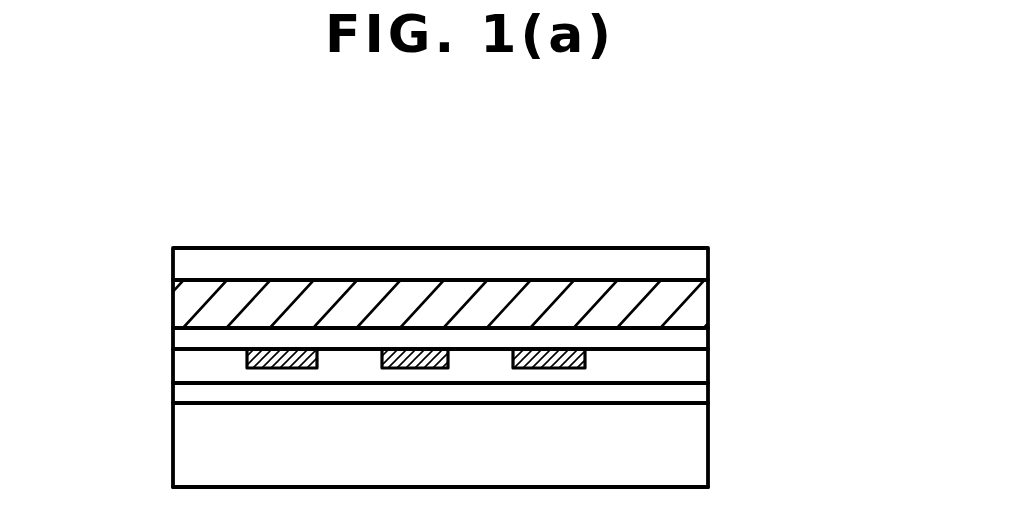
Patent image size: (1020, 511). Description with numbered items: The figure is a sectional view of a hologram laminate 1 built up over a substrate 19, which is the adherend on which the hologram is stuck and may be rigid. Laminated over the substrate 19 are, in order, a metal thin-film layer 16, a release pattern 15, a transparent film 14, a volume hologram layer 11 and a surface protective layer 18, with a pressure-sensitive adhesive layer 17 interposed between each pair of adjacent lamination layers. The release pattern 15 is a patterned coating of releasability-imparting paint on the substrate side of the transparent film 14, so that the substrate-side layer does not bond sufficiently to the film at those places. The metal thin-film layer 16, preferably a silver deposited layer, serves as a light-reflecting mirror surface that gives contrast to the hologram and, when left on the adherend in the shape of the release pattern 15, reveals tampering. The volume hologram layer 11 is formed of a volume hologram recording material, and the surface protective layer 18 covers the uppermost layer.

The hologram laminate 1 is at (601, 177).
The volume hologram layer 11 is at (708, 303).
The transparent film 14 is at (702, 340).
The release pattern 15 is at (585, 360).
The metal thin-film layer 16 is at (697, 377).
The pressure-sensitive adhesive layer 17 is at (172, 392).
The surface protective layer 18 is at (708, 260).
The substrate 19 is at (698, 452).